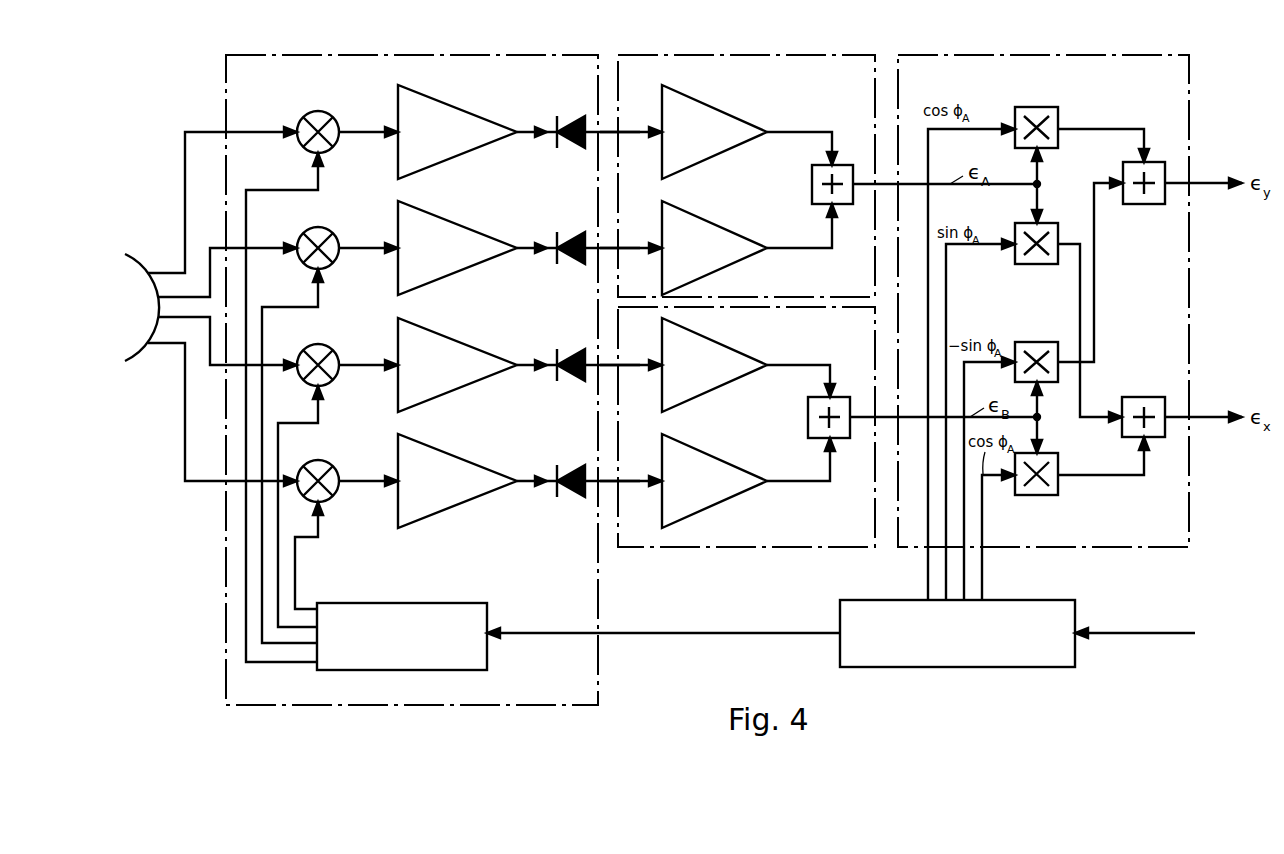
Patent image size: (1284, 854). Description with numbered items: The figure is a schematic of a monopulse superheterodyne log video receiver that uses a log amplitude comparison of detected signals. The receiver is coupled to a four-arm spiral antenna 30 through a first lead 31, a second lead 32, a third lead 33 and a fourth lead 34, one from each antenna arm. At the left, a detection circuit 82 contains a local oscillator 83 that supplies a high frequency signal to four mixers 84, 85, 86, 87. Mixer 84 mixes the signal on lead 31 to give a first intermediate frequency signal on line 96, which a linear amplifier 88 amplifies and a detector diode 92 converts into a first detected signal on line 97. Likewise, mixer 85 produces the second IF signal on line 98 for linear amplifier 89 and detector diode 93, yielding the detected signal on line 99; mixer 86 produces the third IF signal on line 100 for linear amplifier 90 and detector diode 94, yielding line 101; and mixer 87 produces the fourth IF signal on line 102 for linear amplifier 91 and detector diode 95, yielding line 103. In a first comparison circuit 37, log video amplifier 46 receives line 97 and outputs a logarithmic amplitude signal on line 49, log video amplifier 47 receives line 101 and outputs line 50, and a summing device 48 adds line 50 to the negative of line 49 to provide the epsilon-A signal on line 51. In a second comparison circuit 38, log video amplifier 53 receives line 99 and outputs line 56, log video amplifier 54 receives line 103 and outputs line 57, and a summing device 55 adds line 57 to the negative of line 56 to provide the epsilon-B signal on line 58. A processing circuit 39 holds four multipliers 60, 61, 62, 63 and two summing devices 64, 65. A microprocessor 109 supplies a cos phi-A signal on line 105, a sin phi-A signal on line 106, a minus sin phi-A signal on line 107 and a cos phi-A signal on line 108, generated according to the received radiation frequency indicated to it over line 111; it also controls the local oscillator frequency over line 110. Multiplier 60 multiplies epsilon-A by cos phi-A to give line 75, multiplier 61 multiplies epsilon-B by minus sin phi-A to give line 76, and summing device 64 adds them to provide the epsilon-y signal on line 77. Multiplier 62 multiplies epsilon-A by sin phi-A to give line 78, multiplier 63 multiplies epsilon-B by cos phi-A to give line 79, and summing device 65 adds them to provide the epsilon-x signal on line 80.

The four-arm spiral antenna 30 is at (130, 254).
The first lead 31 is at (199, 296).
The second lead 32 is at (166, 345).
The third lead 33 is at (175, 272).
The fourth lead 34 is at (196, 320).
The first comparison circuit 37 is at (766, 55).
The second comparison circuit 38 is at (776, 548).
The processing circuit 39 is at (1058, 55).
The log video amplifier 46 is at (697, 221).
The log video amplifier 47 is at (712, 101).
The summing device 48 is at (812, 180).
The line 49 is at (797, 247).
The line 50 is at (800, 130).
The line 51 is at (856, 195).
The log video amplifier 53 is at (700, 451).
The log video amplifier 54 is at (707, 342).
The summing device 55 is at (808, 404).
The line 56 is at (797, 478).
The line 57 is at (800, 363).
The line 58 is at (852, 432).
The multiplier 60 is at (1042, 107).
The multiplier 61 is at (1035, 342).
The multiplier 62 is at (1045, 223).
The multiplier 63 is at (1043, 496).
The summing device 64 is at (1140, 204).
The summing device 65 is at (1138, 397).
The line 75 is at (1090, 129).
The line 76 is at (1098, 276).
The line 77 is at (1200, 185).
The line 78 is at (1078, 268).
The line 79 is at (1092, 477).
The line 80 is at (1200, 416).
The detection circuit 82 is at (474, 55).
The local oscillator 83 is at (416, 603).
The mixer 84 is at (327, 233).
The mixer 85 is at (327, 466).
The mixer 86 is at (327, 117).
The mixer 87 is at (327, 350).
The linear amplifier 88 is at (447, 220).
The linear amplifier 89 is at (448, 447).
The linear amplifier 90 is at (432, 99).
The linear amplifier 91 is at (450, 335).
The detector diode 92 is at (579, 232).
The detector diode 93 is at (579, 465).
The detector diode 94 is at (578, 115).
The detector diode 95 is at (579, 349).
The line 96 is at (354, 255).
The line 97 is at (626, 246).
The line 98 is at (354, 488).
The line 99 is at (627, 478).
The line 100 is at (355, 139).
The line 101 is at (626, 130).
The line 102 is at (354, 372).
The line 103 is at (627, 362).
The line 105 is at (928, 582).
The line 106 is at (946, 557).
The line 107 is at (964, 570).
The line 108 is at (982, 590).
The microprocessor 109 is at (1078, 604).
The line 110 is at (701, 633).
The line 111 is at (1180, 633).